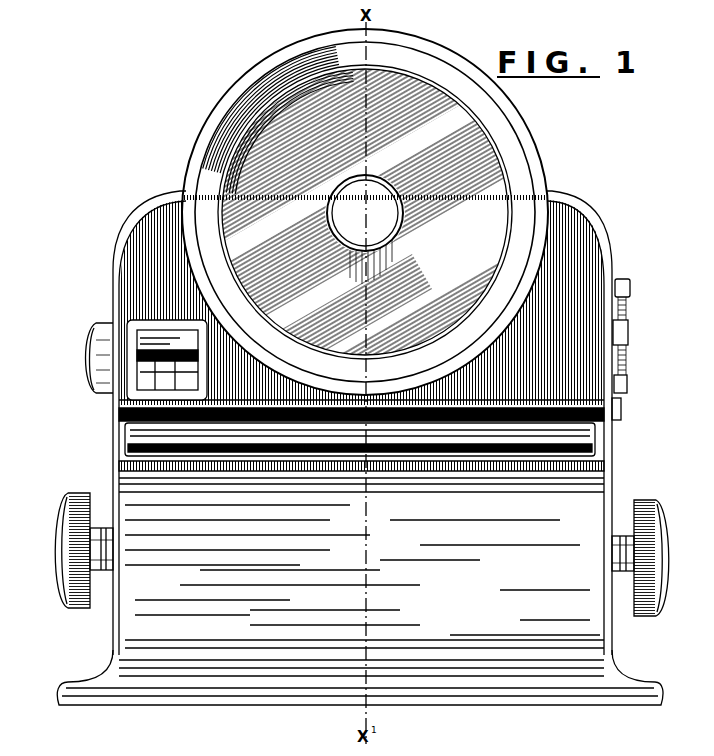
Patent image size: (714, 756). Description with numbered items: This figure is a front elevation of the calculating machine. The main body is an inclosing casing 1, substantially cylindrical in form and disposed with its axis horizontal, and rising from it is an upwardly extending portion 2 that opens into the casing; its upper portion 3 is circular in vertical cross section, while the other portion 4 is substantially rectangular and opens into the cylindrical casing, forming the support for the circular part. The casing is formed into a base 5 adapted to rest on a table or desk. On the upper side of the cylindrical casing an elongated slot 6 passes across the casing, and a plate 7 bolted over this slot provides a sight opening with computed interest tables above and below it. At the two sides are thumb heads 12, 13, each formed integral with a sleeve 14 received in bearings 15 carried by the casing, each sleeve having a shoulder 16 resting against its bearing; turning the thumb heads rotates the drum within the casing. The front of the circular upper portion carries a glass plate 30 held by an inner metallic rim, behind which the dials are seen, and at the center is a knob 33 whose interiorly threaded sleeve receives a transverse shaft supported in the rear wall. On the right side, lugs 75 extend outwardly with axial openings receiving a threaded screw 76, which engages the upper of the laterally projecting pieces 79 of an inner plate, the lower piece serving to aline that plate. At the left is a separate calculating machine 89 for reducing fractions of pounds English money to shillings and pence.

The inclosing casing 1 is at (606, 486).
The upwardly extending portion 2 is at (548, 262).
The upper portion 3 is at (538, 172).
The rectangular portion 4 is at (597, 402).
The base 5 is at (640, 692).
The elongated slot 6 is at (597, 453).
The plate 7 is at (360, 439).
The thumb head 12 is at (667, 567).
The thumb head 13 is at (57, 565).
The sleeve 14 is at (96, 543).
The bearing 15 is at (108, 574).
The shoulder 16 is at (106, 548).
The glass plate 30 is at (366, 214).
The knob 33 is at (365, 229).
The lug 75 is at (627, 380).
The threaded screw 76 is at (630, 307).
The laterally projecting piece 79 is at (628, 332).
The separate calculating machine 89 is at (150, 350).